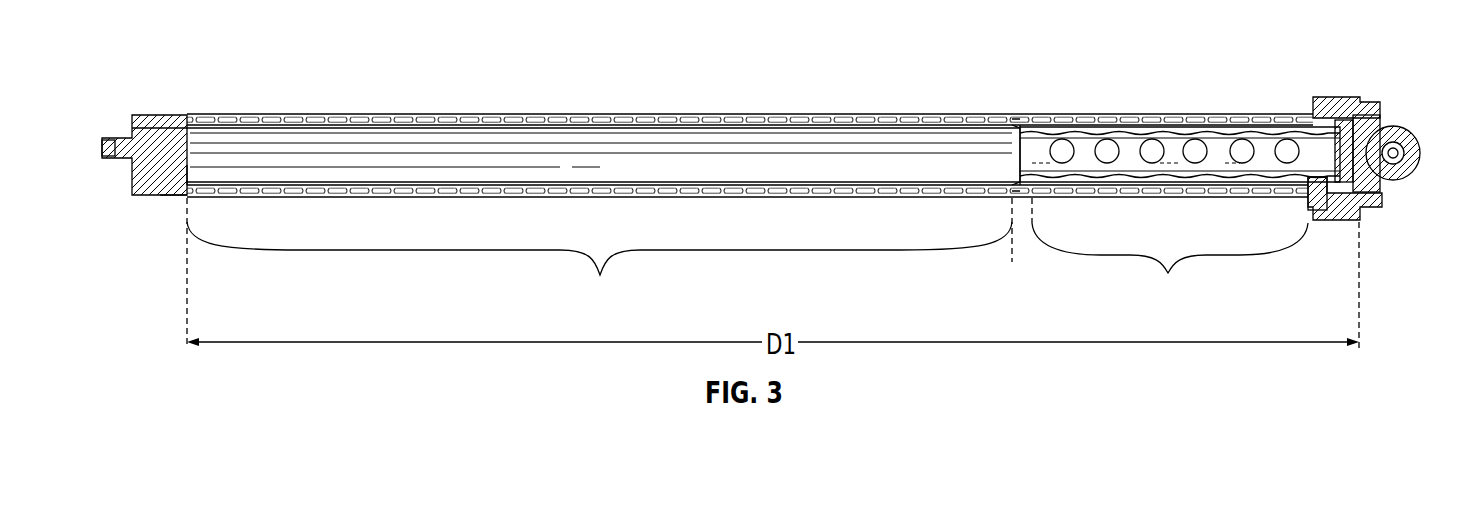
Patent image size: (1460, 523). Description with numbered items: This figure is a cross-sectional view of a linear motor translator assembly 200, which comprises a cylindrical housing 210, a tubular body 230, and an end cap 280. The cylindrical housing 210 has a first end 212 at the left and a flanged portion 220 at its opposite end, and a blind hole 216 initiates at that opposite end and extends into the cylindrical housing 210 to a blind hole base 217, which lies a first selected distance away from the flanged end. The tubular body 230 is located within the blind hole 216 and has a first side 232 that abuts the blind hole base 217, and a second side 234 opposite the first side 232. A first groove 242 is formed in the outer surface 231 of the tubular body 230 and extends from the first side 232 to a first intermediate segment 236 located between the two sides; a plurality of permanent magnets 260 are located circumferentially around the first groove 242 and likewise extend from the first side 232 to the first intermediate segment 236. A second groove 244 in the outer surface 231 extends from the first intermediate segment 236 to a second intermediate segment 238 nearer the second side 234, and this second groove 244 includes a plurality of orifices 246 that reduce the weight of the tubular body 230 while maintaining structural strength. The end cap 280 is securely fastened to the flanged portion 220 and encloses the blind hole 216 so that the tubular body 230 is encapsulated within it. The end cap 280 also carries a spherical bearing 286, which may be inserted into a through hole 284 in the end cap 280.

The linear motor translator assembly 200 is at (262, 26).
The cylindrical housing 210 is at (175, 115).
The first end 212 is at (130, 164).
The blind hole 216 is at (1148, 180).
The blind hole base 217 is at (190, 168).
The flanged portion 220 is at (1310, 207).
The tubular body 230 is at (750, 158).
The outer surface 231 is at (1028, 197).
The first side 232 is at (180, 190).
The second side 234 is at (1368, 190).
The first intermediate segment 236 is at (1020, 122).
The second intermediate segment 238 is at (1313, 117).
The first groove 242 is at (599, 267).
The second groove 244 is at (1170, 266).
The plurality of orifices 246 is at (1195, 152).
The plurality of permanent magnets 260 is at (895, 114).
The end cap 280 is at (1398, 128).
The through hole 284 is at (1420, 170).
The spherical bearing 286 is at (1410, 136).